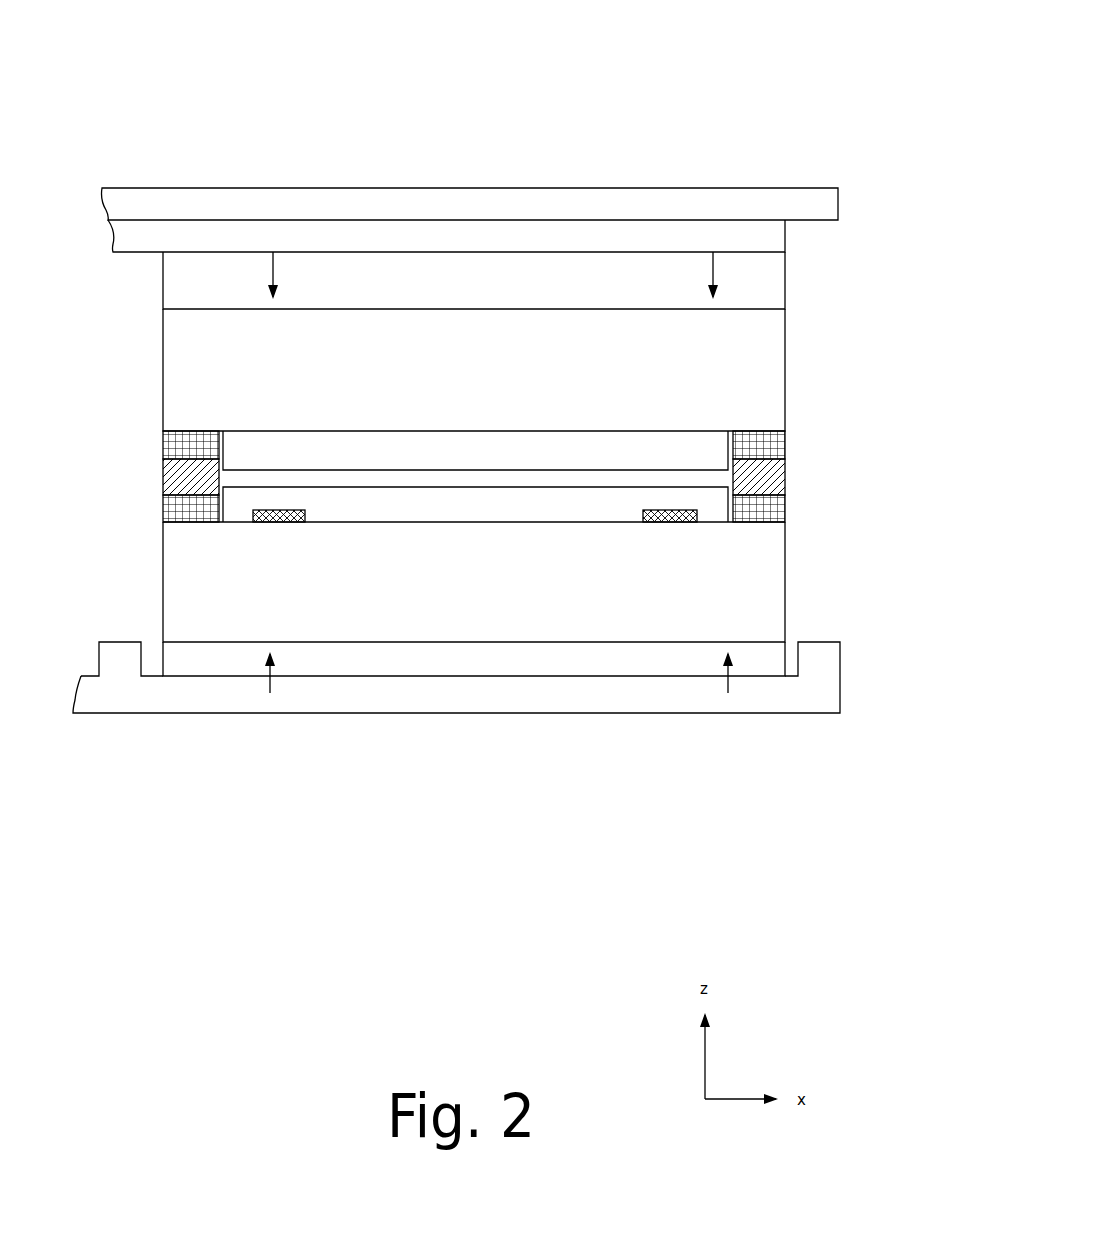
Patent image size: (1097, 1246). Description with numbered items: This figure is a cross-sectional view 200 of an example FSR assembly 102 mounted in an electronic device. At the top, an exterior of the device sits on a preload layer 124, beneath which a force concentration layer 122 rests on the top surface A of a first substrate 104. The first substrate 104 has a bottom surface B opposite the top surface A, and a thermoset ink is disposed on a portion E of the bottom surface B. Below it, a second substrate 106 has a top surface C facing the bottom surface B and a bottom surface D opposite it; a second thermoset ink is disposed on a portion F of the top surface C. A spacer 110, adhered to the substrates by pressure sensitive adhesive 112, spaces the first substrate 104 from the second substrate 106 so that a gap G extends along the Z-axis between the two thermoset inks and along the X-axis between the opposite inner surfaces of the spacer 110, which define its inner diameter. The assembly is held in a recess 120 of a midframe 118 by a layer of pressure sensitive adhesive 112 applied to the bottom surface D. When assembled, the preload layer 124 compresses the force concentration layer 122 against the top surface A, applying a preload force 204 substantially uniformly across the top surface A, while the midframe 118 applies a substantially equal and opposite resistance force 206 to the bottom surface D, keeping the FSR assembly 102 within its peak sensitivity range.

The cross-sectional view 200 is at (737, 66).
The FSR assembly 102 is at (793, 323).
The preload layer 124 is at (446, 236).
The force concentration layer 122 is at (474, 280).
The first substrate 104 is at (474, 370).
The second substrate 106 is at (474, 582).
The spacer 110 is at (163, 479).
The pressure sensitive adhesive 112 is at (163, 451).
The midframe 118 is at (570, 713).
The recess 120 is at (154, 651).
The preload force 204 is at (273, 281).
The resistance force 206 is at (270, 665).
The top surface A is at (155, 301).
The bottom surface B is at (153, 440).
The top surface C is at (795, 512).
The bottom surface D is at (798, 653).
The portion E is at (610, 440).
The portion F is at (597, 511).
The gap G is at (316, 478).